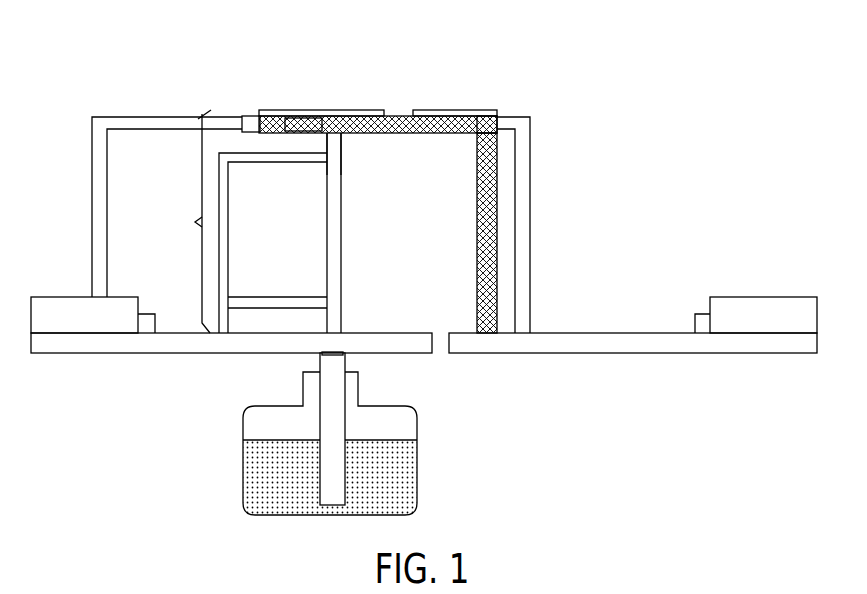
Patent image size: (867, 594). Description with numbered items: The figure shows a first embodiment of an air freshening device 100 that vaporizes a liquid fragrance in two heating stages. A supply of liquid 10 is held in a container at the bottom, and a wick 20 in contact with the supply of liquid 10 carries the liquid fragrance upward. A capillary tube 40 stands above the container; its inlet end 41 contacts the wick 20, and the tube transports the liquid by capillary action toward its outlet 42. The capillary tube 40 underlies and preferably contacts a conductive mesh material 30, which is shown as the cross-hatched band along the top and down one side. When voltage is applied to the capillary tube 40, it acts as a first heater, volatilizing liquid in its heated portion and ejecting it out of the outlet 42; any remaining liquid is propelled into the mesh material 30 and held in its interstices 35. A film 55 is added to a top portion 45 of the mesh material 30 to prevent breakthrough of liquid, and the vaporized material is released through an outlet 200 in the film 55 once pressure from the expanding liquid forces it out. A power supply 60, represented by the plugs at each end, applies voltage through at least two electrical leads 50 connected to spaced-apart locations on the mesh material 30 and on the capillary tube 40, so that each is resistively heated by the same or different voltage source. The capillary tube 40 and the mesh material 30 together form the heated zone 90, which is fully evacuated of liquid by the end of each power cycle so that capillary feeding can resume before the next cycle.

The air freshening device 100 is at (505, 417).
The supply of liquid 10 is at (325, 443).
The wick 20 is at (333, 427).
The conductive mesh material 30 is at (404, 176).
The interstices 35 is at (317, 118).
The capillary tube 40 is at (341, 260).
The inlet end 41 is at (333, 333).
The outlet 42 is at (342, 163).
The top portion 45 is at (467, 92).
The electrical leads 50 is at (142, 128).
The film 55 is at (488, 110).
The power supply 60 is at (54, 287).
The heated zone 90 is at (189, 221).
The outlet 200 is at (397, 115).